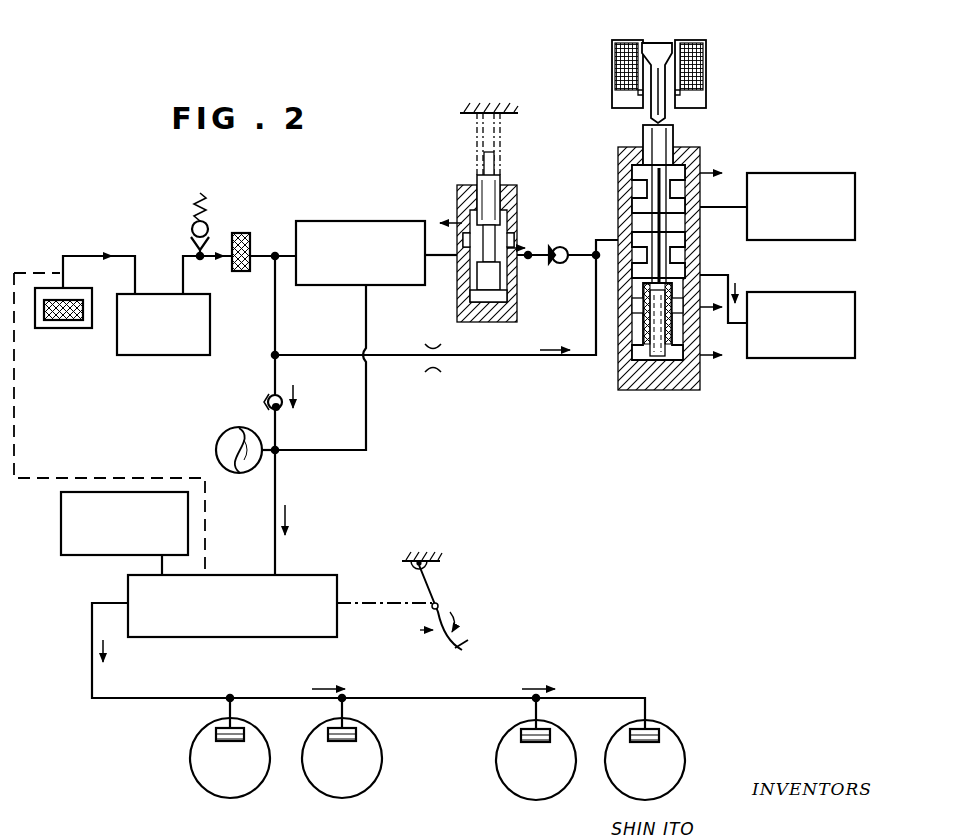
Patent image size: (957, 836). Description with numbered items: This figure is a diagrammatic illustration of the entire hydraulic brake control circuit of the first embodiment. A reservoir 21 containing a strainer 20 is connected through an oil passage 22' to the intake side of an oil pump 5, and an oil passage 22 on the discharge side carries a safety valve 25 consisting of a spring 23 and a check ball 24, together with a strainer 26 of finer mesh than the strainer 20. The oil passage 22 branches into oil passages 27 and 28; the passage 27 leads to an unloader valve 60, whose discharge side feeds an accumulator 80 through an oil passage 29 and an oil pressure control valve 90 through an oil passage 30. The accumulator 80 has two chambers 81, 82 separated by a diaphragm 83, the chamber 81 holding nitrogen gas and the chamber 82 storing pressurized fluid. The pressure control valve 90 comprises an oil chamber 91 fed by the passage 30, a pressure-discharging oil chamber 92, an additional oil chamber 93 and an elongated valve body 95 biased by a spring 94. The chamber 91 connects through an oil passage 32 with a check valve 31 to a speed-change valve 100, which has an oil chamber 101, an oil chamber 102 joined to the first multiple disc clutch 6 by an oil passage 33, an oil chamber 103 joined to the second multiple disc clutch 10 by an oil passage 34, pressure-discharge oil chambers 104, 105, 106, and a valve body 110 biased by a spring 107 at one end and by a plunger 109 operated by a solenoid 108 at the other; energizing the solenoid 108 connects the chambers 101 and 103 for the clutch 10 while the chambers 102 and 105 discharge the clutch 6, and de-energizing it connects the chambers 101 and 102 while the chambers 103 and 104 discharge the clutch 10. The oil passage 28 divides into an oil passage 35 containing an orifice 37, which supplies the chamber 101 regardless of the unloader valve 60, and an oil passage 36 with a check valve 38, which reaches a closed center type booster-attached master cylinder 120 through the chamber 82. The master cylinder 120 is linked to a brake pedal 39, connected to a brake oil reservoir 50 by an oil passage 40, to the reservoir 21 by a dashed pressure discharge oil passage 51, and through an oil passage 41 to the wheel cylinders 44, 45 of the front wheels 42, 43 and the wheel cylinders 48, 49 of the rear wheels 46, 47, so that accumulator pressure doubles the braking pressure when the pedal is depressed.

The oil pump 5 is at (126, 298).
The first multiple disc clutch 6 is at (796, 293).
The second multiple disc clutch 10 is at (790, 174).
The strainer 20 is at (57, 322).
The reservoir 21 is at (96, 318).
The oil passage 22 is at (187, 272).
The oil passage 22' is at (99, 261).
The spring 23 is at (204, 208).
The check ball 24 is at (208, 226).
The safety valve 25 is at (203, 221).
The strainer 26 is at (252, 270).
The oil passage 27 is at (282, 254).
The oil passage 28 is at (277, 312).
The oil passage 29 is at (368, 320).
The oil passage 30 is at (470, 262).
The check valve 31 is at (566, 246).
The oil passage 32 is at (588, 262).
The oil passage 33 is at (733, 277).
The oil passage 34 is at (736, 206).
The oil passage 35 is at (516, 360).
The oil passage 36 is at (277, 472).
The orifice 37 is at (432, 368).
The check valve 38 is at (267, 404).
The brake pedal 39 is at (442, 612).
The oil passage 40 is at (148, 566).
The oil passage 41 is at (92, 645).
The front wheel 42 is at (262, 786).
The front wheel 43 is at (374, 786).
The wheel cylinder 44 is at (224, 742).
The wheel cylinder 45 is at (336, 742).
The rear wheel 46 is at (567, 789).
The rear wheel 47 is at (676, 789).
The wheel cylinder 48 is at (528, 743).
The wheel cylinder 49 is at (638, 743).
The brake oil reservoir 50 is at (60, 522).
The pressure discharge oil passage 51 is at (100, 476).
The unloader valve 60 is at (334, 220).
The accumulator 80 is at (223, 468).
The chamber 81 is at (218, 450).
The chamber 82 is at (262, 460).
The diaphragm 83 is at (244, 470).
The oil pressure control valve 90 is at (482, 218).
The oil chamber 91 is at (470, 242).
The pressure-discharging oil chamber 92 is at (463, 220).
The oil chamber 93 is at (494, 303).
The spring 94 is at (508, 146).
The valve body 95 is at (502, 208).
The speed-change valve 100 is at (667, 198).
The oil chamber 101 is at (640, 234).
The oil chamber 102 is at (688, 245).
The oil chamber 103 is at (690, 212).
The pressure-discharge oil chamber 104 is at (690, 165).
The pressure-discharge oil chamber 105 is at (680, 320).
The pressure-discharge oil chamber 106 is at (680, 364).
The spring 107 is at (650, 362).
The solenoid 108 is at (700, 75).
The plunger 109 is at (652, 45).
The valve body 110 is at (640, 180).
The closed center type booster-attached master cylinder 120 is at (305, 575).